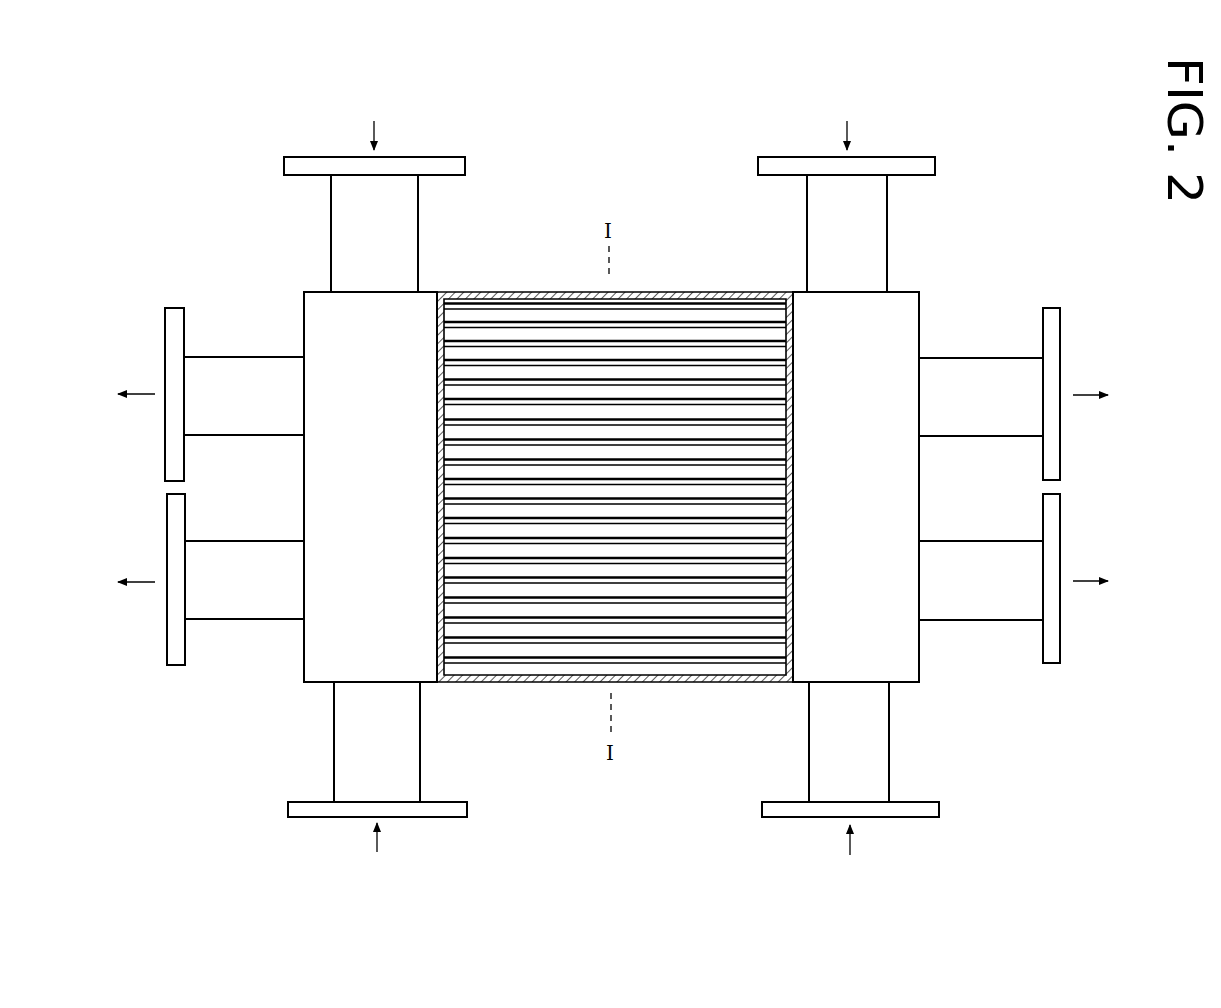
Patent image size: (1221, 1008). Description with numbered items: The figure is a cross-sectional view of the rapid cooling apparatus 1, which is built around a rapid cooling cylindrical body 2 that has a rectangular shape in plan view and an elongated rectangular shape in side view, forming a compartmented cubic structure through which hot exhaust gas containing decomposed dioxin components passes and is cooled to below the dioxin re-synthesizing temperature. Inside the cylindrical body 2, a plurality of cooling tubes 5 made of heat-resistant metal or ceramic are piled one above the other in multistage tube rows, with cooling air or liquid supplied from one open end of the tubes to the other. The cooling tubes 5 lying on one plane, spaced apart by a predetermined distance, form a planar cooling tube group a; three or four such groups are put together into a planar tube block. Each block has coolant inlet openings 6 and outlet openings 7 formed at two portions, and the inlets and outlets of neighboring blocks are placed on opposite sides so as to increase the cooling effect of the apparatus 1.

The rapid cooling apparatus 1 is at (641, 290).
The rapid cooling cylindrical body 2 is at (653, 644).
The cooling tubes 5 is at (527, 352).
The coolant inlet openings 6 is at (432, 157).
The coolant outlet openings 7 is at (165, 370).
The planar cooling tube group a is at (575, 593).